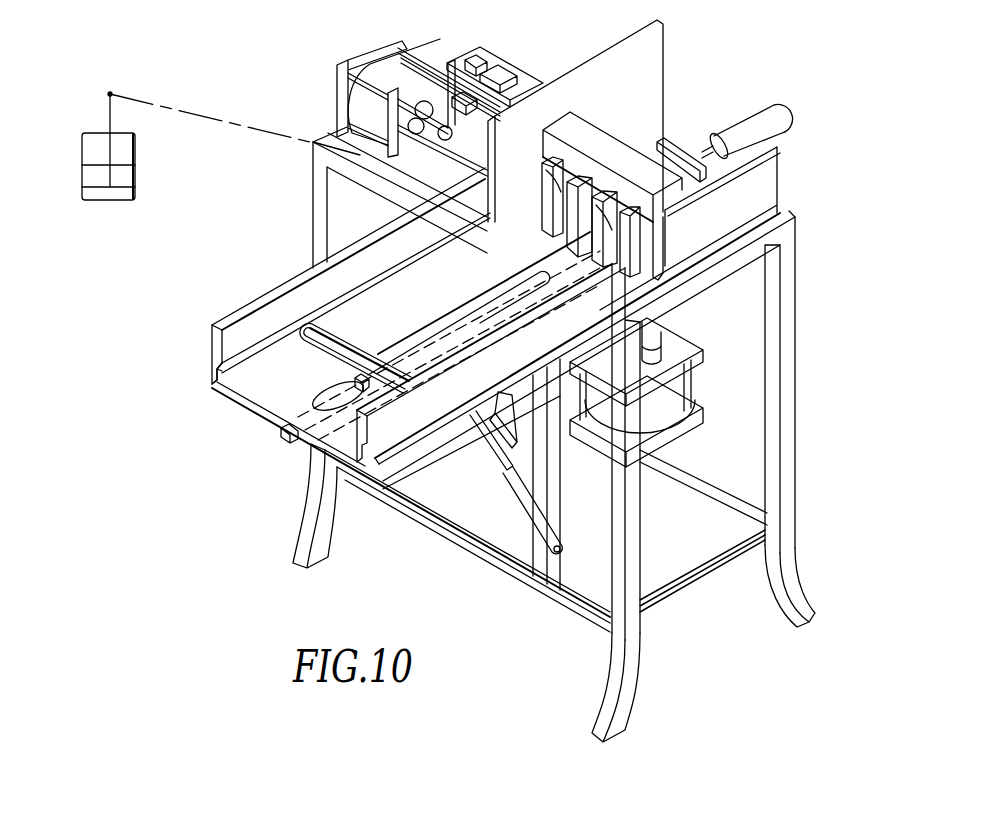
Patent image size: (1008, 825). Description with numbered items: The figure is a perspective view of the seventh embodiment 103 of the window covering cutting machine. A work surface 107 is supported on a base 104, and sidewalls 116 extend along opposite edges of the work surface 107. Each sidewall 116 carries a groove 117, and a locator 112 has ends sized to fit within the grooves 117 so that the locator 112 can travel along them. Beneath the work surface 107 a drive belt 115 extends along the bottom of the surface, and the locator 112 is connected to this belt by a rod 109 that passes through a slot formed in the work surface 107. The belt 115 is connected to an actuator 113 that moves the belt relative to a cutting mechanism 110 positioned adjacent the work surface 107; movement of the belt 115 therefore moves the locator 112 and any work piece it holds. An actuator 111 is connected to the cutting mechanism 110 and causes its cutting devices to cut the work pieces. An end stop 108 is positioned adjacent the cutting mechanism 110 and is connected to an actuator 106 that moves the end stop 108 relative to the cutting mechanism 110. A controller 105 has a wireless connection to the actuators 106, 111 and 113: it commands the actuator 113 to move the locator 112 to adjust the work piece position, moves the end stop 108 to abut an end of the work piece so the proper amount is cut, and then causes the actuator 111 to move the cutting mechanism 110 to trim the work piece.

The cutting machine embodiment 103 is at (743, 53).
The base 104 is at (810, 321).
The controller 105 is at (137, 193).
The actuator 106 is at (780, 113).
The work surface 107 is at (337, 433).
The end stop 108 is at (673, 147).
The rod 109 is at (330, 382).
The cutting mechanism 110 is at (598, 120).
The actuator 111 is at (385, 72).
The locator 112 is at (337, 335).
The actuator 113 is at (670, 398).
The drive belt 115 is at (283, 432).
The sidewalls 116 is at (208, 354).
The grooves 117 is at (237, 368).